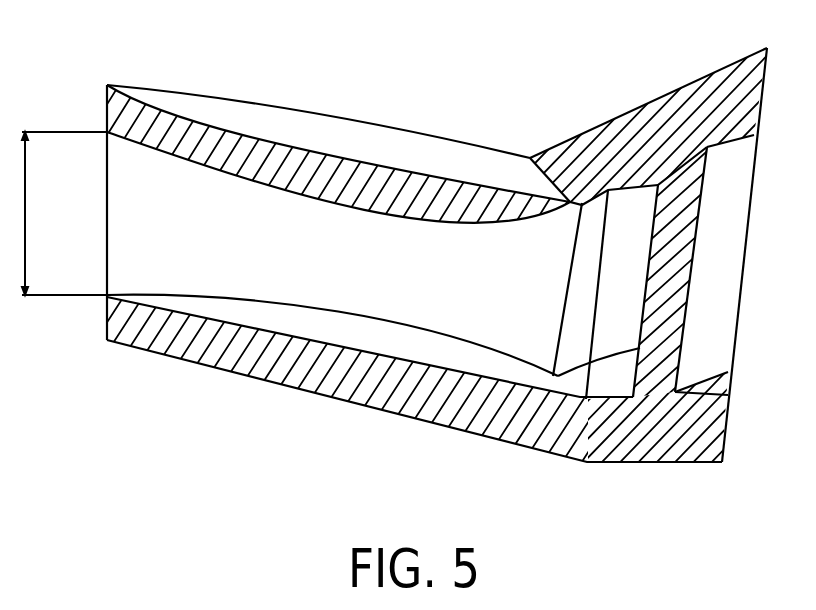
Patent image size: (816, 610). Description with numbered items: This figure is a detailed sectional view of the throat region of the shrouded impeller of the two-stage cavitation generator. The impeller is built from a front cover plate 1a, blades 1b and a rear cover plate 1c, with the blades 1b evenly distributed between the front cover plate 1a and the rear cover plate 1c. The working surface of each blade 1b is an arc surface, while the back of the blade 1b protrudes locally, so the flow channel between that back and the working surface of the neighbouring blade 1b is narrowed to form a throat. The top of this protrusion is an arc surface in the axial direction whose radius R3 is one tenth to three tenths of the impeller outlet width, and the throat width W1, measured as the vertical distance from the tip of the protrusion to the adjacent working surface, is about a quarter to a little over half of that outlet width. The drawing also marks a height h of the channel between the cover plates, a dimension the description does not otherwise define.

The front cover plate 1a is at (133, 110).
The blade 1b is at (138, 243).
The rear cover plate 1c is at (130, 315).
The height dimension h is at (53, 213).
The width of the throat structure W1 is at (638, 333).
The radius of the arc surface at the top of the protrusion R3 is at (572, 355).